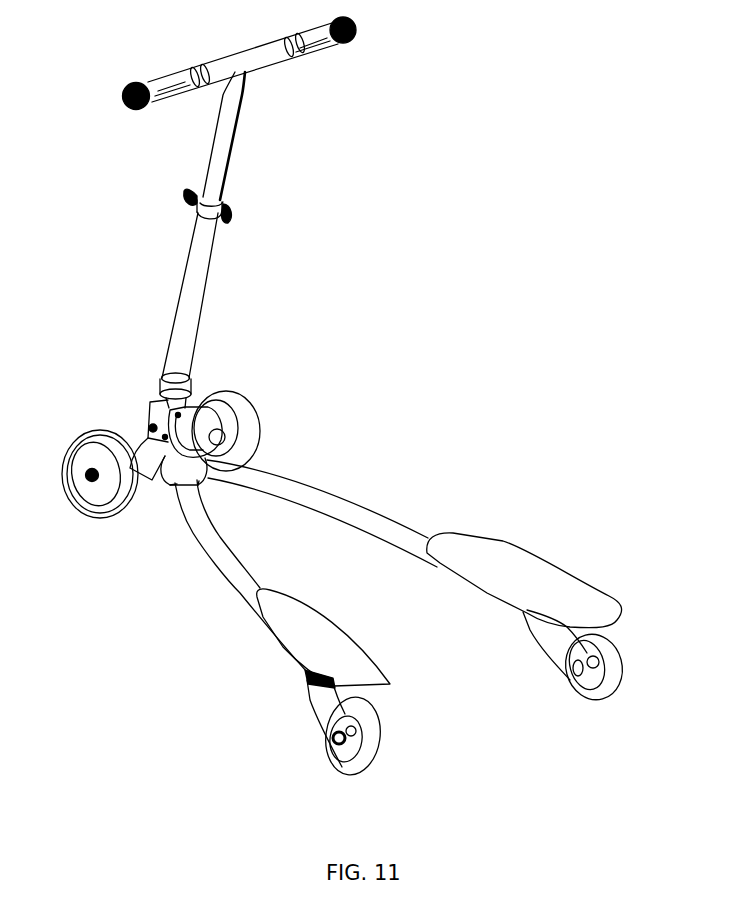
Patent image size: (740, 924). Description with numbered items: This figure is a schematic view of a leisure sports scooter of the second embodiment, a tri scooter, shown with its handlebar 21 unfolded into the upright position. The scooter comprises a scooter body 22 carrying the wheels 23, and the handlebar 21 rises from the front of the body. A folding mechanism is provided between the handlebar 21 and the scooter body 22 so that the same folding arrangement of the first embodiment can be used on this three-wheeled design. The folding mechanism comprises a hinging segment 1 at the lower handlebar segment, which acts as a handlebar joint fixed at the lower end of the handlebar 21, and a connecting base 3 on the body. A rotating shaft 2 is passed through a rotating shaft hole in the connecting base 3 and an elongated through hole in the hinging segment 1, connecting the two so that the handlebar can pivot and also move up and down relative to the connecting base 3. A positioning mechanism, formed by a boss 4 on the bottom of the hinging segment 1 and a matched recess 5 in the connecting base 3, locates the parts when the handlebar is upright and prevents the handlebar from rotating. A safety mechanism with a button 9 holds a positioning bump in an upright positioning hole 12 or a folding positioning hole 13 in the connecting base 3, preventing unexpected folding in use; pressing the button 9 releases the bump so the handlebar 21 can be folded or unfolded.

The hinging segment 1 is at (165, 385).
The rotating shaft 2 is at (414, 570).
The connecting base 3 is at (130, 428).
The boss 4 is at (323, 678).
The recess 5 is at (120, 435).
The button 9 is at (163, 402).
The upright positioning hole 12 is at (152, 412).
The folding positioning hole 13 is at (160, 488).
The handlebar 21 is at (170, 350).
The scooter body 22 is at (223, 560).
The wheels 23 is at (103, 498).